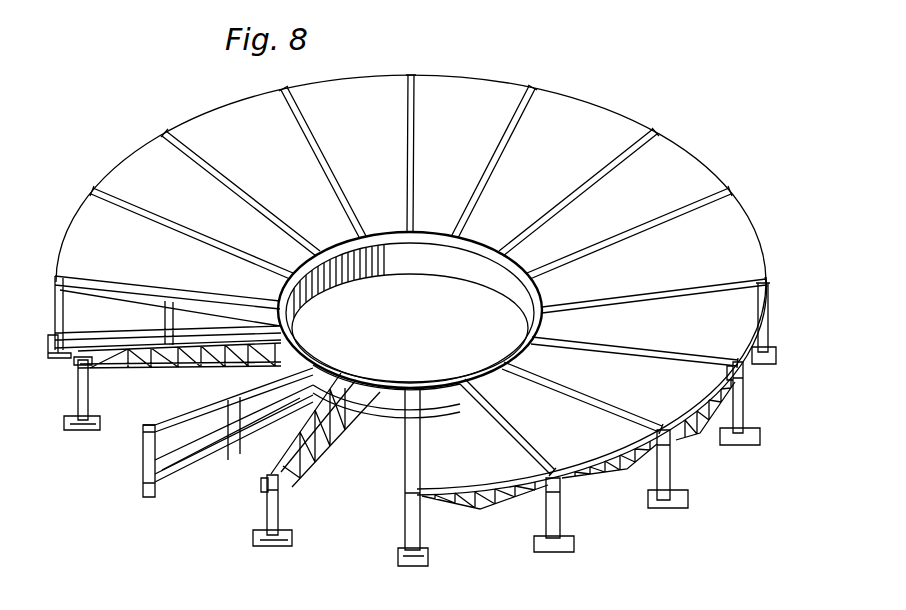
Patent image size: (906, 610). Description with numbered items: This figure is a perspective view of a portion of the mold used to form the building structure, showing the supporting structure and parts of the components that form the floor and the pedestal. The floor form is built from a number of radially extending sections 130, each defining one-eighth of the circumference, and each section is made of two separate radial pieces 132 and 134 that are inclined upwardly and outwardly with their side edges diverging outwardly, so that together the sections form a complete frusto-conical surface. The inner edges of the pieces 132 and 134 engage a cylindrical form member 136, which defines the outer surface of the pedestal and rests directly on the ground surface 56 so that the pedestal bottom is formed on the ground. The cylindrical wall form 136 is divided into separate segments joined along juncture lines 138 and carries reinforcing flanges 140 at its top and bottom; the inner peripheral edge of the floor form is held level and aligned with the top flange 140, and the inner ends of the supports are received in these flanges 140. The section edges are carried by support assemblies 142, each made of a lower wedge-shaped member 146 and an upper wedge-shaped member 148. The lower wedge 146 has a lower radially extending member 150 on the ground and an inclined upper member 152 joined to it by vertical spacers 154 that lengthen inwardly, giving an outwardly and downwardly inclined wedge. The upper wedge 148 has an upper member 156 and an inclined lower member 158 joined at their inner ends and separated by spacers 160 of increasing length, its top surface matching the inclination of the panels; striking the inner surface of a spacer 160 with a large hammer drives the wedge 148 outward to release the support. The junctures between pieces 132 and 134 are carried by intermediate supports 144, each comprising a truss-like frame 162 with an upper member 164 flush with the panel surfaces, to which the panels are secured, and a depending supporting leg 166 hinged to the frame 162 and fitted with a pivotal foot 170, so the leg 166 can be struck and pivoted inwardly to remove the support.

The ground surface 56 is at (478, 356).
The radially extending section 130 is at (440, 292).
The radial piece 132 is at (760, 264).
The radial piece 134 is at (688, 175).
The cylindrical form member 136 is at (480, 271).
The juncture line 138 is at (412, 259).
The reinforcing flange 140 is at (541, 288).
The support assembly 142 is at (768, 327).
The intermediate support assembly 144 is at (507, 463).
The lower wedge-shaped member 146 is at (199, 455).
The upper wedge-shaped member 148 is at (214, 389).
The lower radially extending member 150 is at (172, 486).
The inclined upper member 152 is at (341, 379).
The vertical spacer 154 is at (333, 373).
The upper member 156 is at (160, 421).
The inclined lower member 158 is at (268, 432).
The vertical spacer 160 is at (143, 470).
The truss-like frame 162 is at (300, 452).
The upper member 164 is at (326, 433).
The supporting leg 166 is at (277, 513).
The pivotal foot 170 is at (253, 512).